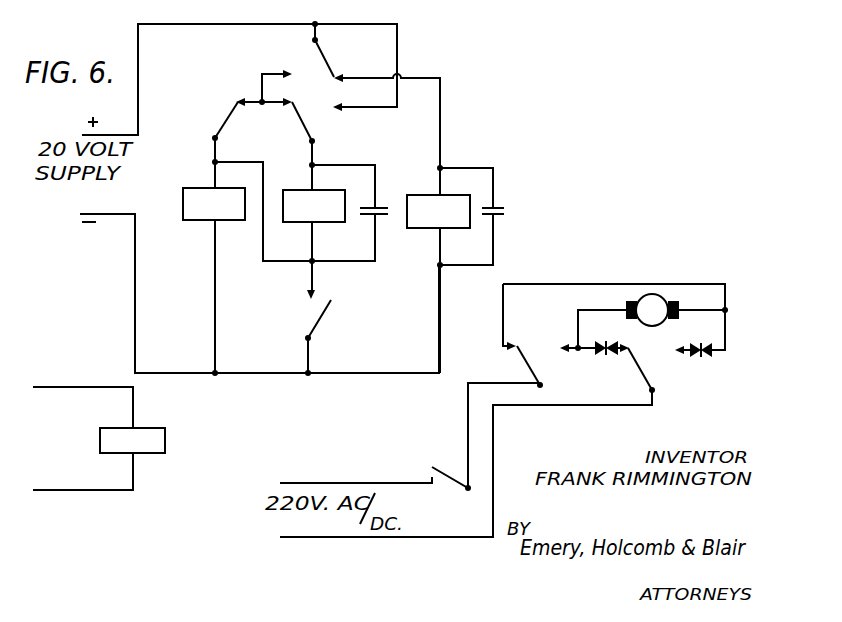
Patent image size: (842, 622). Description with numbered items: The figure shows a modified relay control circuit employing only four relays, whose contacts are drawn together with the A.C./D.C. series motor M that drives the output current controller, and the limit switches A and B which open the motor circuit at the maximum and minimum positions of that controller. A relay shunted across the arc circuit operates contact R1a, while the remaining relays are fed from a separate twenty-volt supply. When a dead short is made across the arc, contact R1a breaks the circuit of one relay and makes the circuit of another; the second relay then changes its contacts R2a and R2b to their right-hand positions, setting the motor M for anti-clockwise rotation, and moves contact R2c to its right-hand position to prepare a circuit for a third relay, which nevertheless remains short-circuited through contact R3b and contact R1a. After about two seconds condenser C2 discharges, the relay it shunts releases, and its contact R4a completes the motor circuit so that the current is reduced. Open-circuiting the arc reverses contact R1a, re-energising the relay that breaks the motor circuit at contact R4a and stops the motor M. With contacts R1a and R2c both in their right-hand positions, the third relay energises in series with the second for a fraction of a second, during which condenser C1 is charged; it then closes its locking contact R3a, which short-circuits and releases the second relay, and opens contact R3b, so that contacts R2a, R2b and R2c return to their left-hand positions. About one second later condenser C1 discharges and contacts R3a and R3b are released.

The contact of relay R1 R1a is at (227, 255).
The contact of relay R2 R2a is at (550, 367).
The contact of relay R2 R2b is at (656, 368).
The contact of relay R2 R2c is at (318, 183).
The contact of relay R3 R3a is at (332, 317).
The contact of relay R3 R3b is at (247, 221).
The contact of relay R4 R4a is at (410, 328).
The condenser C1 is at (352, 213).
The condenser C2 is at (480, 216).
The limit switch A is at (589, 339).
The limit switch B is at (693, 341).
The series motor M is at (653, 321).